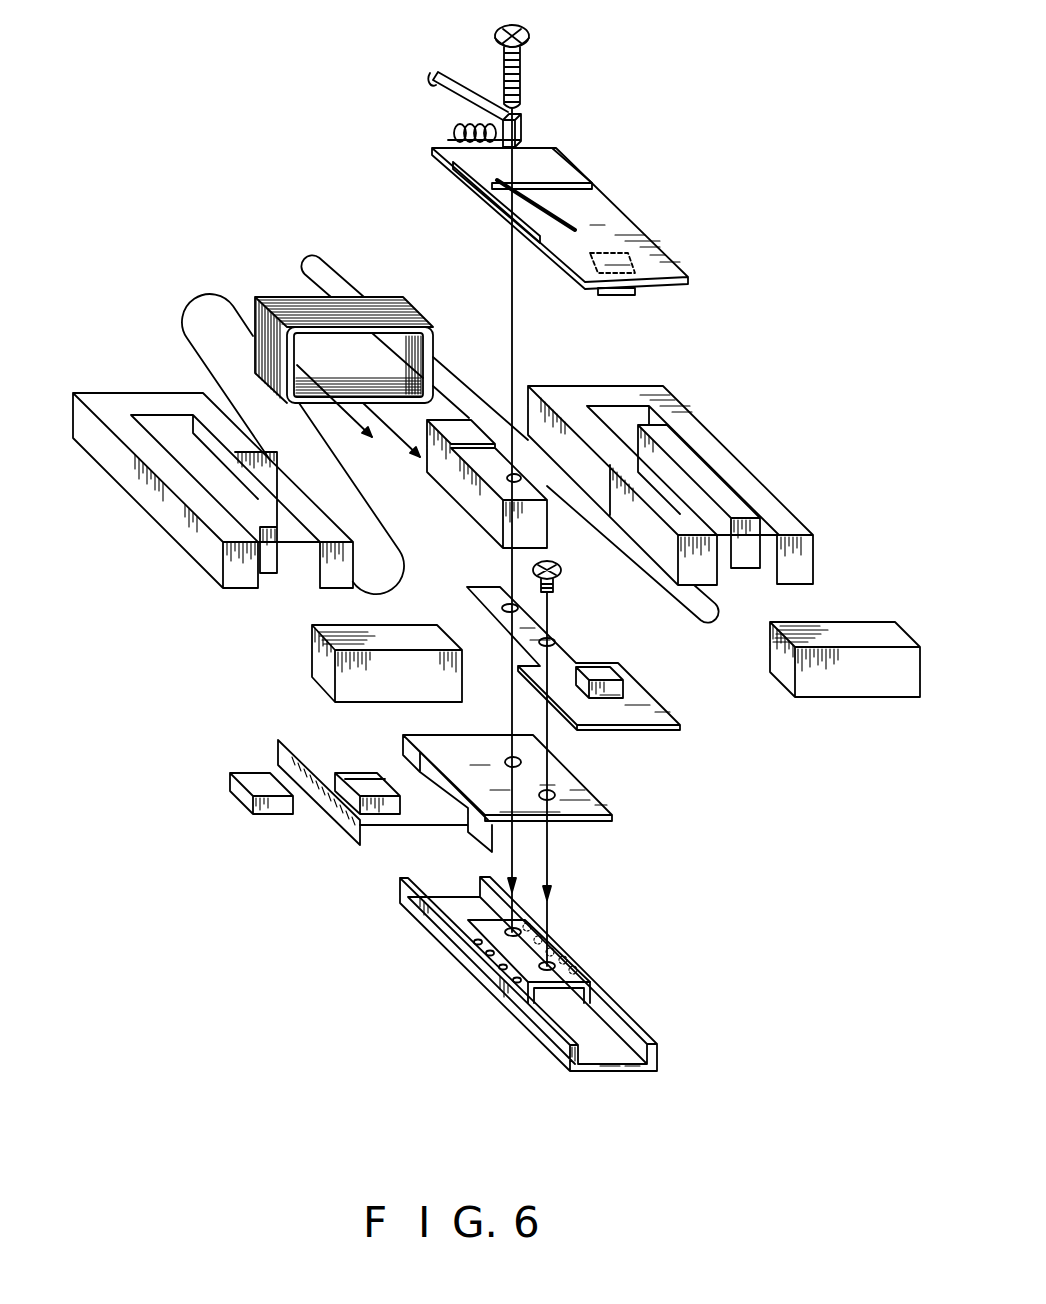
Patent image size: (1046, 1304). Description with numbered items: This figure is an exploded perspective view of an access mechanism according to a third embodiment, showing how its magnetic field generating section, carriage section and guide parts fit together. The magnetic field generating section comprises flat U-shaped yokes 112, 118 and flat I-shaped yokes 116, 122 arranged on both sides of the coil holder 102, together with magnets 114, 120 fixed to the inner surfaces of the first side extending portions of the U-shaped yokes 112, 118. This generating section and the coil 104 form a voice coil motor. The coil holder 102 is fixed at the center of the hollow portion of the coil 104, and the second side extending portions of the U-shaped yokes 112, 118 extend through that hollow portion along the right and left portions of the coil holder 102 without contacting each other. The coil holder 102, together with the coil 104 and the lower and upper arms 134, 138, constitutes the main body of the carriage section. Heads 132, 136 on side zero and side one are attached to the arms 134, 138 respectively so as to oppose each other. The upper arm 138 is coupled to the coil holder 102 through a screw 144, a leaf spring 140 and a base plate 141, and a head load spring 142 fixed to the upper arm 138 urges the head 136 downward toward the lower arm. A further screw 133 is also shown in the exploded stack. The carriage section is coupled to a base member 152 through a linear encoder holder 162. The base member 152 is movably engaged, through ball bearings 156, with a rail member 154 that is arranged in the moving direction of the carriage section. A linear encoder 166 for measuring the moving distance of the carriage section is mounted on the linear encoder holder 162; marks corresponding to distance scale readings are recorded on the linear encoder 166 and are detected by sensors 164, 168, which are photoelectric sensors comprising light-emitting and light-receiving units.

The coil holder 102 is at (450, 496).
The coil 104 is at (262, 298).
The flat U-shaped yoke 112 is at (203, 553).
The magnet 114 is at (213, 478).
The flat I-shaped yoke 116 is at (322, 670).
The flat U-shaped yoke 118 is at (780, 495).
The magnet 120 is at (688, 457).
The flat I-shaped yoke 122 is at (858, 688).
The head 132 is at (610, 672).
The screw 133 is at (560, 575).
The lower arm 134 is at (640, 718).
The head 136 is at (626, 295).
The upper arm 138 is at (603, 210).
The leaf spring 140 is at (557, 167).
The base plate 141 is at (528, 135).
The head load spring 142 is at (437, 70).
The screw 144 is at (532, 40).
The base member 152 is at (568, 1005).
The rail member 154 is at (497, 985).
The ball bearings 156 is at (566, 947).
The linear encoder holder 162 is at (585, 803).
The sensor 164 is at (388, 808).
The linear encoder 166 is at (278, 752).
The sensor 168 is at (273, 815).